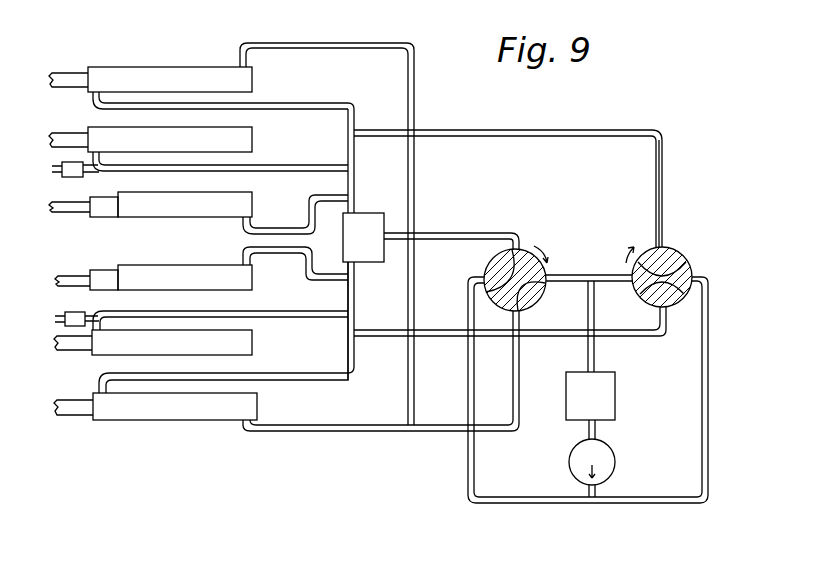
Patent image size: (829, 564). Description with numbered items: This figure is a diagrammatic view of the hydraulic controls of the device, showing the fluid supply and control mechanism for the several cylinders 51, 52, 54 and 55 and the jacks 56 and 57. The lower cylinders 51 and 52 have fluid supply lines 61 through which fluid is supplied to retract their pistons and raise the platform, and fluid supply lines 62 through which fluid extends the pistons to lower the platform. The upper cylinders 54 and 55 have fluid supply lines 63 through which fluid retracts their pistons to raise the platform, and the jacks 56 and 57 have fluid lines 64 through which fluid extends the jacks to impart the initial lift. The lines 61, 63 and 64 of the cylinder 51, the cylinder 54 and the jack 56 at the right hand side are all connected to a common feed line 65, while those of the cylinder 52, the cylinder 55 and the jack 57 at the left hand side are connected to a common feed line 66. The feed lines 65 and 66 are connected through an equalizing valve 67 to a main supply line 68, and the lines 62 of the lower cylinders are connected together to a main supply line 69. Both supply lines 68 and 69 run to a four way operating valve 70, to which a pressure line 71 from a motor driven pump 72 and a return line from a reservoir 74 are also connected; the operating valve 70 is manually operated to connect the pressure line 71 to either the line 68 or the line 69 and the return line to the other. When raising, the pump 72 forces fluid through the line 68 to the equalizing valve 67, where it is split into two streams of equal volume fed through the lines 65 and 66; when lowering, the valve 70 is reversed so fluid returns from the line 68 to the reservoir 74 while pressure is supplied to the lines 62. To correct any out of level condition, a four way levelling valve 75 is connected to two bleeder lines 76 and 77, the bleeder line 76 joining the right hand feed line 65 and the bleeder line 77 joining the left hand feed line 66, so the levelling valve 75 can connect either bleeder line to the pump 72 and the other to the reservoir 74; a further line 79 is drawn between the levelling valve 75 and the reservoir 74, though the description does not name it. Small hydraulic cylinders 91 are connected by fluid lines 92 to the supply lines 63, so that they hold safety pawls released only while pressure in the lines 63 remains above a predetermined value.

The lower cylinder 51 is at (158, 73).
The lower cylinder 52 is at (216, 411).
The upper cylinder 54 is at (250, 141).
The upper cylinder 55 is at (250, 340).
The jack 56 is at (175, 211).
The jack 57 is at (185, 270).
The fluid supply line 61 is at (291, 105).
The fluid supply line 62 is at (284, 48).
The fluid supply line 63 is at (290, 169).
The fluid line 64 is at (280, 226).
The common feed line 65 is at (356, 180).
The common feed line 66 is at (357, 296).
The equalizing valve 67 is at (380, 218).
The main supply line 68 is at (511, 233).
The main supply line 69 is at (458, 432).
The four way operating valve 70 is at (498, 305).
The pressure line 71 is at (474, 378).
The motor driven pump 72 is at (615, 463).
The reservoir 74 is at (608, 388).
The four way levelling valve 75 is at (690, 254).
The bleeder line 76 is at (664, 193).
The bleeder line 77 is at (578, 334).
The conduit 79 is at (596, 305).
The small hydraulic cylinder 91 is at (70, 173).
The fluid line 92 is at (94, 172).